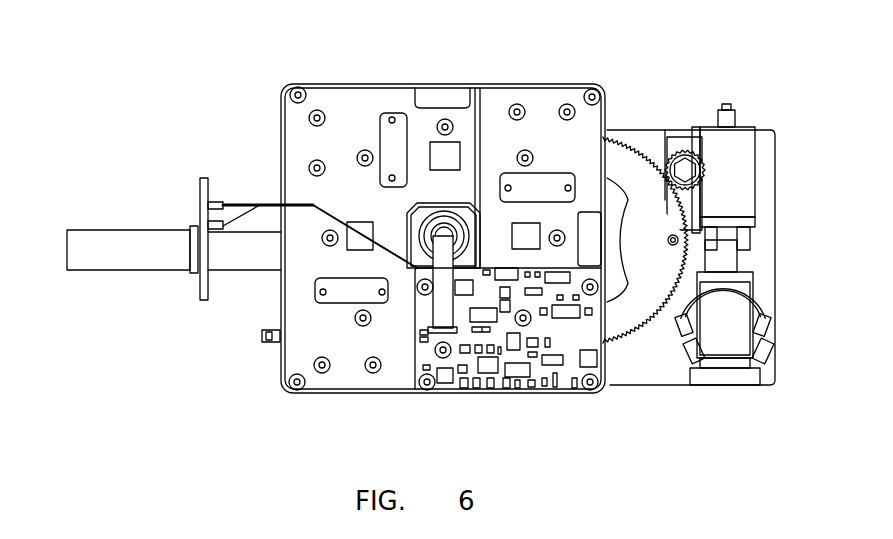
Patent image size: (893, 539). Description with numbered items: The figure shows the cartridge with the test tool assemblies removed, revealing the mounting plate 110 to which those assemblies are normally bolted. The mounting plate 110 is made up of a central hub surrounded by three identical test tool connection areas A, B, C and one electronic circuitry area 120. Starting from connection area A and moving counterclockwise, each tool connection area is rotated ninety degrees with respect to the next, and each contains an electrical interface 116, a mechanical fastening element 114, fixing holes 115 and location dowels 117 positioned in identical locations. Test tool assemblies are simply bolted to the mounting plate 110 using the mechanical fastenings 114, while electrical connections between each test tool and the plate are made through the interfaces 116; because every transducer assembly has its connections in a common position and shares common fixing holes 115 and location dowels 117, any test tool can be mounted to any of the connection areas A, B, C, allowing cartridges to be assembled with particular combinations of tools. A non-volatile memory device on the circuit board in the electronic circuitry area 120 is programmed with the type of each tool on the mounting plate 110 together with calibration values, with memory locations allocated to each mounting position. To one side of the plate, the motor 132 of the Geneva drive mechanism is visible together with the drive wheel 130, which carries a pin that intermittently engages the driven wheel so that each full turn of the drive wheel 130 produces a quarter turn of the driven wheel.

The mounting plate 110 is at (390, 392).
The mechanical fastening 114 is at (388, 140).
The fixing holes 115 is at (359, 150).
The electrical interface 116 is at (455, 157).
The location dowels 117 is at (307, 123).
The electronic circuitry area 120 is at (517, 377).
The drive wheel 130 is at (635, 307).
The motor 132 is at (727, 337).
The test tool connection area A is at (320, 398).
The test tool connection area B is at (285, 130).
The test tool connection area C is at (555, 80).